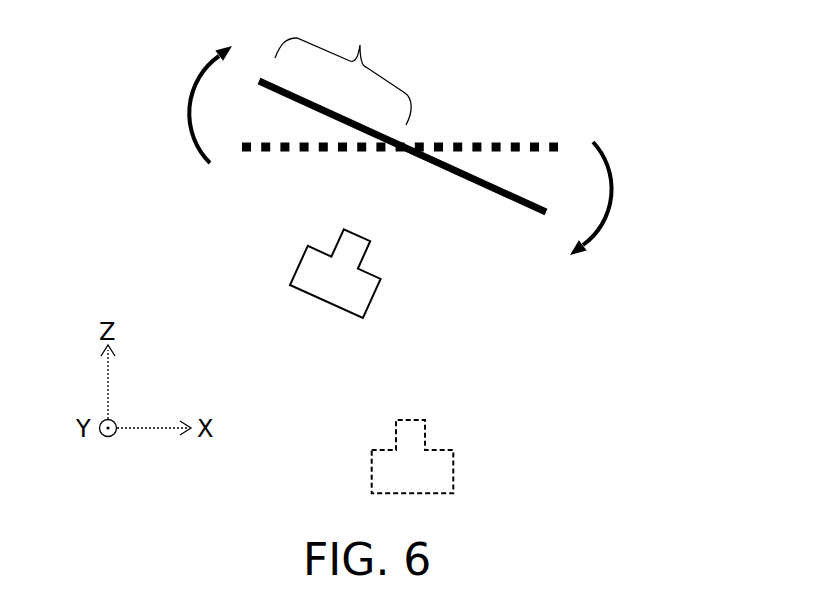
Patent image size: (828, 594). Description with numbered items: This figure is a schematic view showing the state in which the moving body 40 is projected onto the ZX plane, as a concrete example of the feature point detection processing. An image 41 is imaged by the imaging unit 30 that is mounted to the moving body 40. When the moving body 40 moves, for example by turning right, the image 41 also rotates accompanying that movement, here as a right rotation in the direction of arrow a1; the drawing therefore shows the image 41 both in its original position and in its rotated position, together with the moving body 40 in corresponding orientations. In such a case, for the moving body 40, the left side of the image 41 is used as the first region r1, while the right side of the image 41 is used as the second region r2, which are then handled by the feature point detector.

The image 41 is at (456, 168).
The moving body 40 is at (300, 258).
The imaging unit 30 is at (384, 392).
The arrow a1 is at (188, 102).
The first region r1 is at (343, 66).
The second region r2 is at (510, 203).